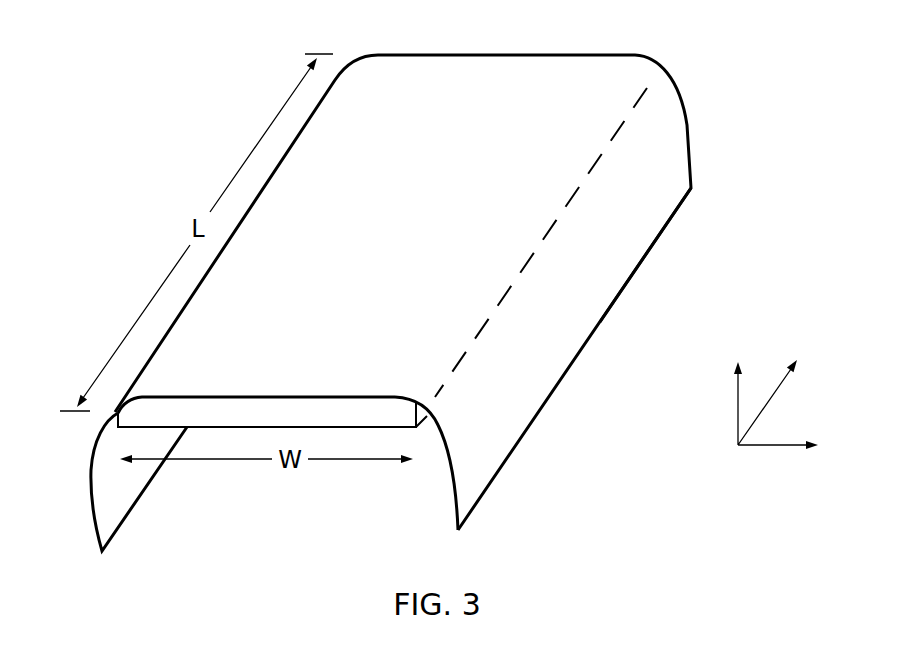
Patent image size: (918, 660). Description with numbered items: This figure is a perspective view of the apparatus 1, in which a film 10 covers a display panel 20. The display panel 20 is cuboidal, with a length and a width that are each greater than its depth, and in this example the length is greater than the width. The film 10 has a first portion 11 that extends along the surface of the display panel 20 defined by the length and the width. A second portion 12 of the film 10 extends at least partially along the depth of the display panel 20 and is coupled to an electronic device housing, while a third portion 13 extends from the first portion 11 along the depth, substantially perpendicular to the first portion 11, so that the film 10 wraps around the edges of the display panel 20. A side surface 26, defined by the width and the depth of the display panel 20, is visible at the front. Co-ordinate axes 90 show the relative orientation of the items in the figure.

The apparatus 1 is at (401, 287).
The film 10 is at (444, 273).
The first portion 11 is at (410, 200).
The second portion 12 is at (627, 232).
The third portion 13 is at (90, 462).
The display panel 20 is at (362, 490).
The side surface 26 is at (233, 417).
The co-ordinate axes 90 is at (731, 478).